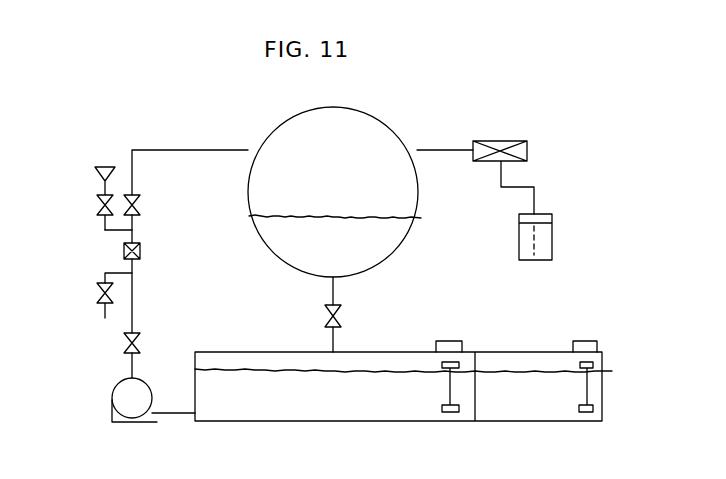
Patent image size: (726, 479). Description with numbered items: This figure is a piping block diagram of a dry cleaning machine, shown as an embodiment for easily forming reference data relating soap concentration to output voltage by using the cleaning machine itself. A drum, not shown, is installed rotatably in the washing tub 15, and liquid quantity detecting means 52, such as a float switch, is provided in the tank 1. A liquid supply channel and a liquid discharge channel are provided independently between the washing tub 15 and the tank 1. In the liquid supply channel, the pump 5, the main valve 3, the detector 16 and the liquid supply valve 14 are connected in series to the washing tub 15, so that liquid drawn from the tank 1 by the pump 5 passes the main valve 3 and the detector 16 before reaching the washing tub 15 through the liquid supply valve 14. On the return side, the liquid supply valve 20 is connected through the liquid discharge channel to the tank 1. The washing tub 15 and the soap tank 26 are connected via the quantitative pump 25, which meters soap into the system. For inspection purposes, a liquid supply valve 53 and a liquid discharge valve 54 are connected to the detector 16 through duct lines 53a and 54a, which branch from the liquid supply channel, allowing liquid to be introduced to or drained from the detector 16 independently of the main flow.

The tank 1 is at (372, 413).
The main valve 3 is at (124, 340).
The pump 5 is at (133, 414).
The liquid supply valve 14 is at (138, 204).
The washing tub 15 is at (400, 229).
The detector 16 is at (141, 250).
The liquid supply valve 20 is at (324, 315).
The quantitative pump 25 is at (507, 142).
The soap tank 26 is at (540, 220).
The liquid quantity detecting means 52 is at (452, 342).
The liquid supply valve 53 is at (97, 200).
The duct line 53a is at (104, 231).
The liquid discharge valve 54 is at (97, 290).
The duct line 54a is at (105, 272).